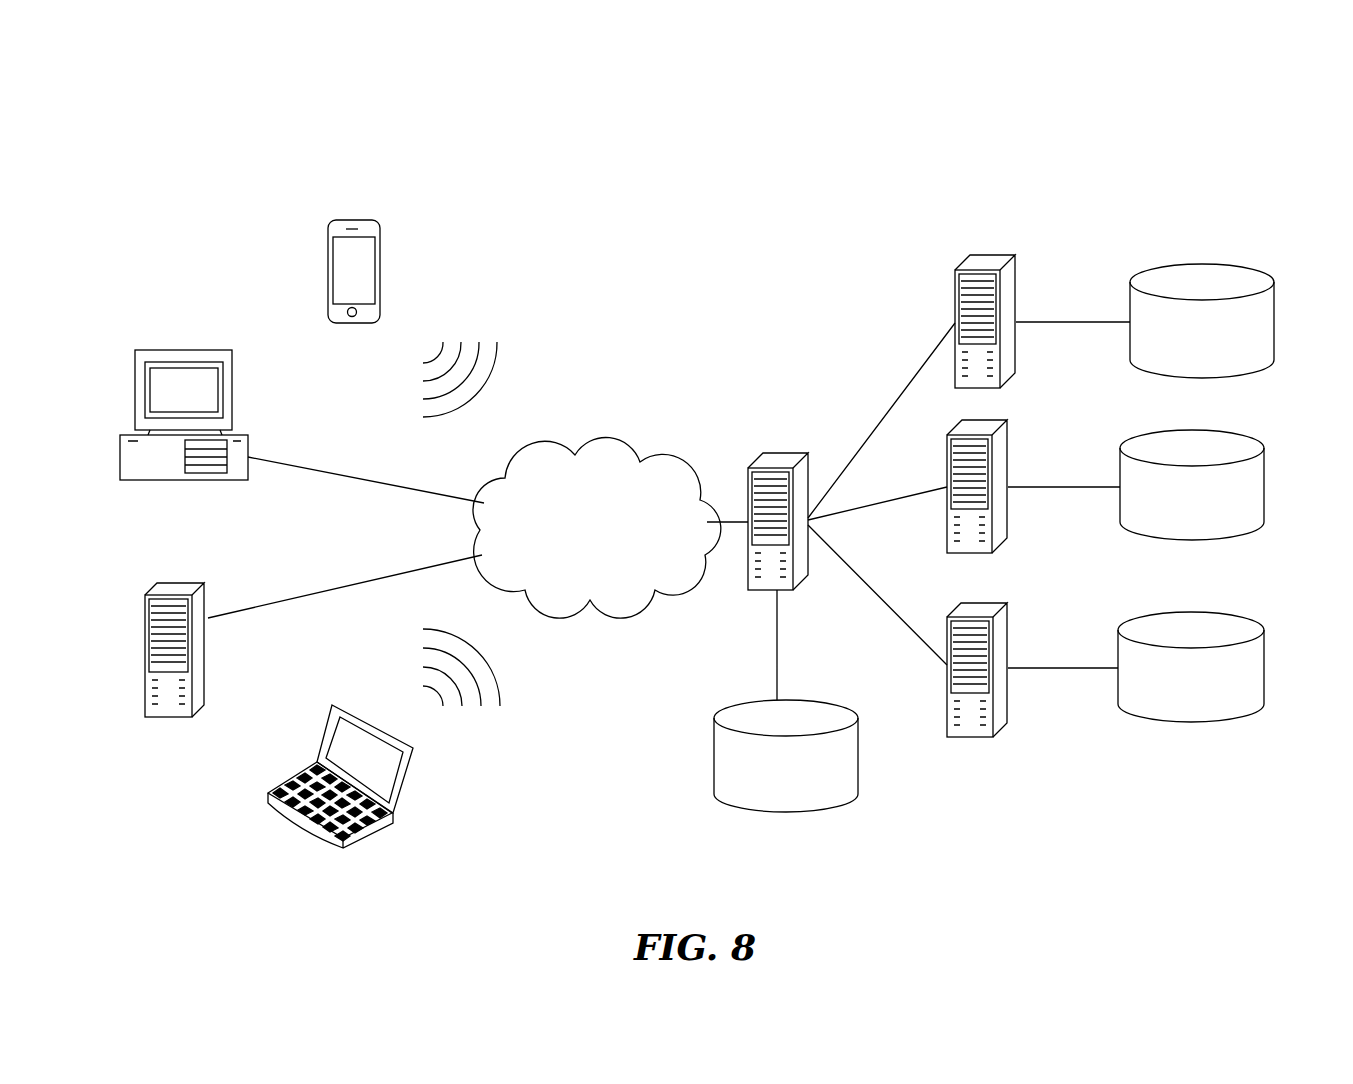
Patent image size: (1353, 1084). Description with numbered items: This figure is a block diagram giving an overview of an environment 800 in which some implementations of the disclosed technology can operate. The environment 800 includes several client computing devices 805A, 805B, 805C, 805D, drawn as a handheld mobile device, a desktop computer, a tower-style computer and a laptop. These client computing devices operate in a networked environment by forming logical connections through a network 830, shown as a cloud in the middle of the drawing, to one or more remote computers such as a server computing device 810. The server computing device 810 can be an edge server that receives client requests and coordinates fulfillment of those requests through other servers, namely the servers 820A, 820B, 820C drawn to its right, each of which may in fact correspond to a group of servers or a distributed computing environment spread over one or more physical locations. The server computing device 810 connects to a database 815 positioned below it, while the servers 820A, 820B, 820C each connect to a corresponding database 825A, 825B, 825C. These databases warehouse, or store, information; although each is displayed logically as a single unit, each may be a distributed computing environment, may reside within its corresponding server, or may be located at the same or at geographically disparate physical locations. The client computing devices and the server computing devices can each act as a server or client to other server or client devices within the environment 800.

The environment 800 is at (1065, 141).
The client computing device 805A is at (369, 221).
The client computing device 805B is at (226, 350).
The client computing device 805C is at (195, 585).
The client computing device 805D is at (407, 777).
The server computing device 810 is at (790, 455).
The database 815 is at (836, 706).
The server 820A is at (1008, 258).
The server 820B is at (1002, 422).
The server 820C is at (998, 605).
The database 825A is at (1197, 268).
The database 825B is at (1188, 432).
The database 825C is at (1187, 612).
The network 830 is at (645, 448).